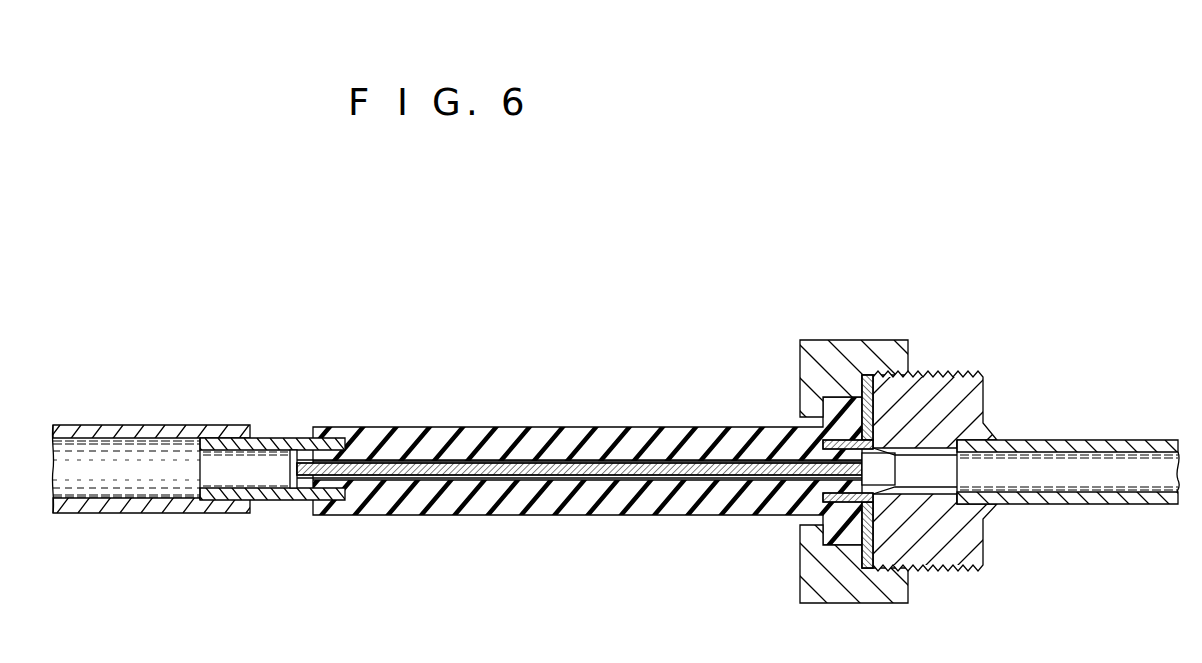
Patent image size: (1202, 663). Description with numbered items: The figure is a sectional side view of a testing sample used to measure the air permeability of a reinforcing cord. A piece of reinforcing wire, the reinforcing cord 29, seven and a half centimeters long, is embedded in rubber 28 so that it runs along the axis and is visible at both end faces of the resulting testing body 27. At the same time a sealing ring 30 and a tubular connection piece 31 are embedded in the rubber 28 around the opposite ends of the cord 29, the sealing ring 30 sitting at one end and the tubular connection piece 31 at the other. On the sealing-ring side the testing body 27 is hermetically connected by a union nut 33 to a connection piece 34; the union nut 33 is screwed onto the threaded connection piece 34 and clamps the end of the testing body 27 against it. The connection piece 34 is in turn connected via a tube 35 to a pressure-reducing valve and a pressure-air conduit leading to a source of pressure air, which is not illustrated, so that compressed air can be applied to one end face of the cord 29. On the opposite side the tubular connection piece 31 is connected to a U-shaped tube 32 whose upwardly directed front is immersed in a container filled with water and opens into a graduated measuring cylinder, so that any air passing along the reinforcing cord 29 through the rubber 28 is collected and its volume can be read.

The testing body 27 is at (622, 426).
The rubber 28 is at (528, 445).
The reinforcing cord 29 is at (412, 460).
The sealing ring 30 is at (866, 376).
The tubular connection piece 31 is at (289, 438).
The U-shaped tube 32 is at (142, 425).
The union nut 33 is at (817, 352).
The connection piece 34 is at (940, 388).
The tube 35 is at (1077, 442).